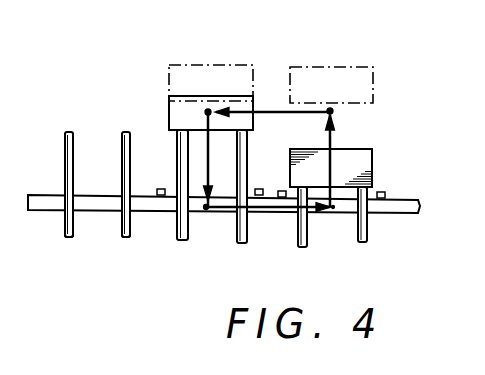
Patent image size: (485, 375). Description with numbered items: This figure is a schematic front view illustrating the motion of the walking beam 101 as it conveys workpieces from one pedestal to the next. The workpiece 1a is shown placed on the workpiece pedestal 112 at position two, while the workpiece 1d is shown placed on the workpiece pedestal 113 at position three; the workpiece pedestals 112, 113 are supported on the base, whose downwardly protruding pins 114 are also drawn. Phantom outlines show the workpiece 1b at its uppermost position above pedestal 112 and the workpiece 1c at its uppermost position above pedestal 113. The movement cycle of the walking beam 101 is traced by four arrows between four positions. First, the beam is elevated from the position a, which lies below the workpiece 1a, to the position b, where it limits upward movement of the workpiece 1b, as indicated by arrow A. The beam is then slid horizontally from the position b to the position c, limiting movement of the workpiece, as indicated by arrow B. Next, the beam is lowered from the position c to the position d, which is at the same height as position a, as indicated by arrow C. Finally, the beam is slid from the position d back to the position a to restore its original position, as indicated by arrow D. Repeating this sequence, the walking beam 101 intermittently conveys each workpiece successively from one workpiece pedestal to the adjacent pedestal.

The workpiece 1a is at (375, 142).
The workpiece 1b is at (366, 72).
The workpiece 1c is at (220, 77).
The workpiece 1d is at (168, 120).
The walking beam 101 is at (397, 207).
The workpiece pedestal 112 is at (364, 188).
The workpiece pedestal 113 is at (178, 143).
The lead pin ends protruding below board 114 is at (72, 234).
The arrow A is at (332, 135).
The arrow B is at (276, 110).
The arrow C is at (205, 158).
The arrow D is at (265, 214).
The position a is at (333, 214).
The position b is at (330, 108).
The position c is at (210, 132).
The position d is at (206, 214).